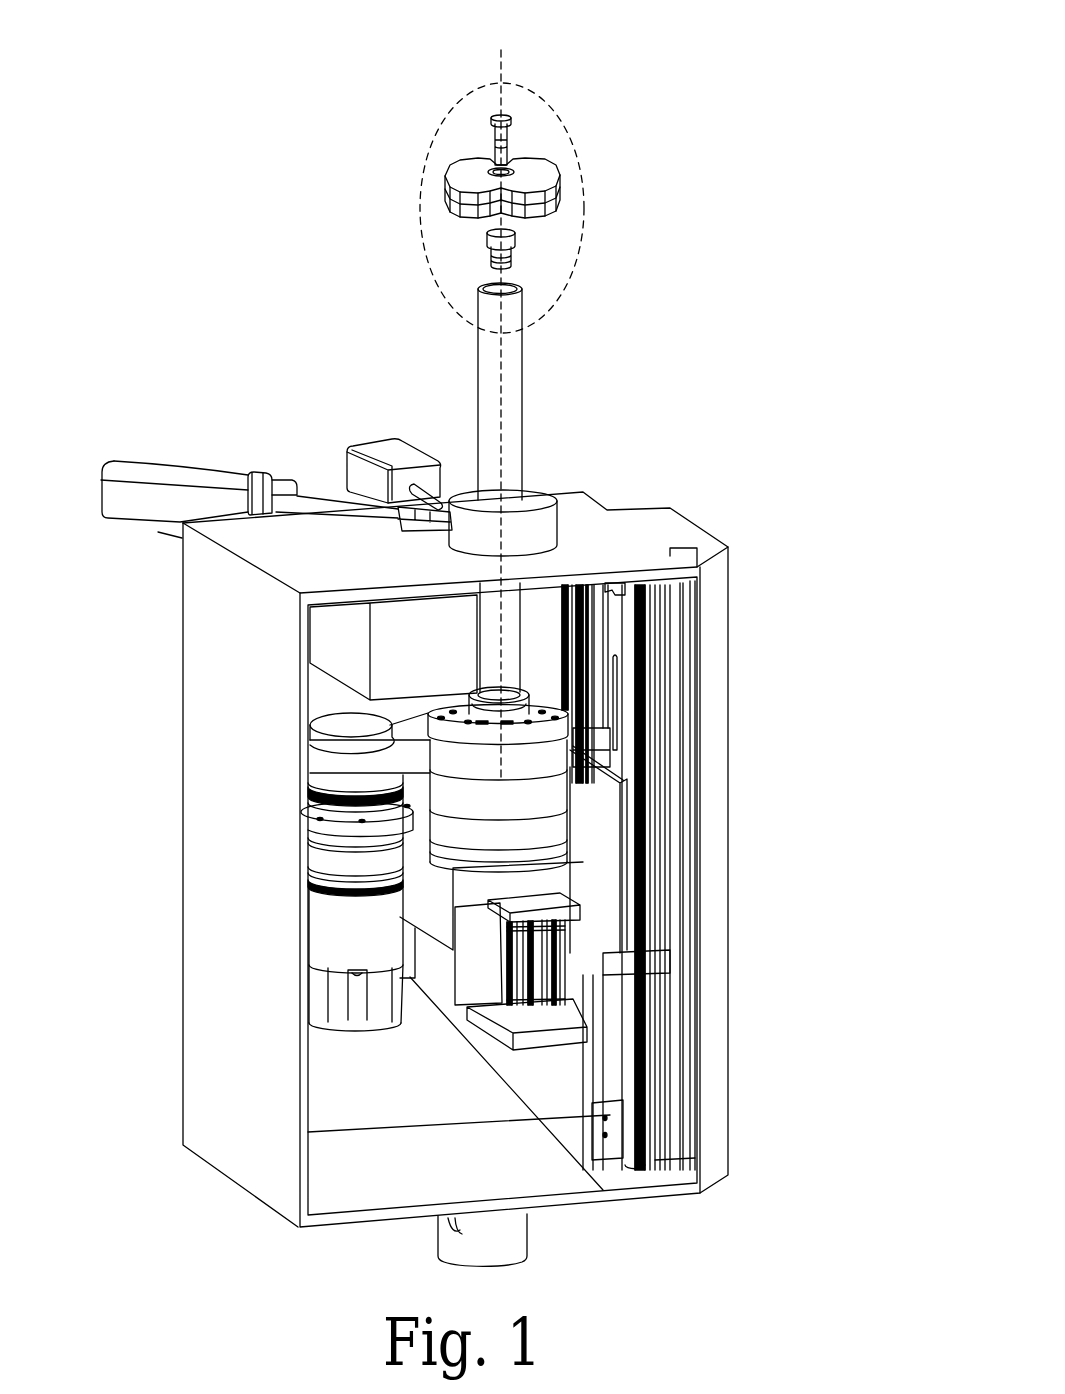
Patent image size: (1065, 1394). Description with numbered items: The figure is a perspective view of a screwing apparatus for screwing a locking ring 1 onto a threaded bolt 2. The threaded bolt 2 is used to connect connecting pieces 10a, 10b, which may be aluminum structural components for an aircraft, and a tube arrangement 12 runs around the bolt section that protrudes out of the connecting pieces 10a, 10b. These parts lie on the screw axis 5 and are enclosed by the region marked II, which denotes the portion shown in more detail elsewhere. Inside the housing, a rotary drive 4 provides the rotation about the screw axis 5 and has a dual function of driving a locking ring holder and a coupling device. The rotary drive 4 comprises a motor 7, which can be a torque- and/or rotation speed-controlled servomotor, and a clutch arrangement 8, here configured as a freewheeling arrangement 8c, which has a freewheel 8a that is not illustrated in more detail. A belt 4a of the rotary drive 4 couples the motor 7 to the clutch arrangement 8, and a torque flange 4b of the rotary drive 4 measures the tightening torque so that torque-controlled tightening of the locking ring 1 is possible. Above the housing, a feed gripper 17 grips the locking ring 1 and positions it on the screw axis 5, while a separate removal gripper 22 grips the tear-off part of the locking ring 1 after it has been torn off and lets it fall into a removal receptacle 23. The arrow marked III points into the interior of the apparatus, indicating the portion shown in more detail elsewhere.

The locking ring 1 is at (468, 247).
The threaded bolt 2 is at (478, 128).
The rotary drive 4 is at (453, 1032).
The belt 4a is at (405, 760).
The torque flange 4b is at (348, 843).
The screw axis 5 is at (503, 66).
The motor 7 is at (350, 935).
The clutch arrangement 8 is at (649, 628).
The freewheel 8a is at (540, 780).
The freewheeling arrangement 8c is at (548, 686).
The connecting piece 10a is at (520, 167).
The connecting piece 10b is at (547, 200).
The tube arrangement 12 is at (522, 373).
The feed gripper 17 is at (373, 513).
The removal gripper 22 is at (433, 492).
The removal receptacle 23 is at (348, 648).
The detail region II is at (572, 133).
The rail assembly III is at (595, 928).